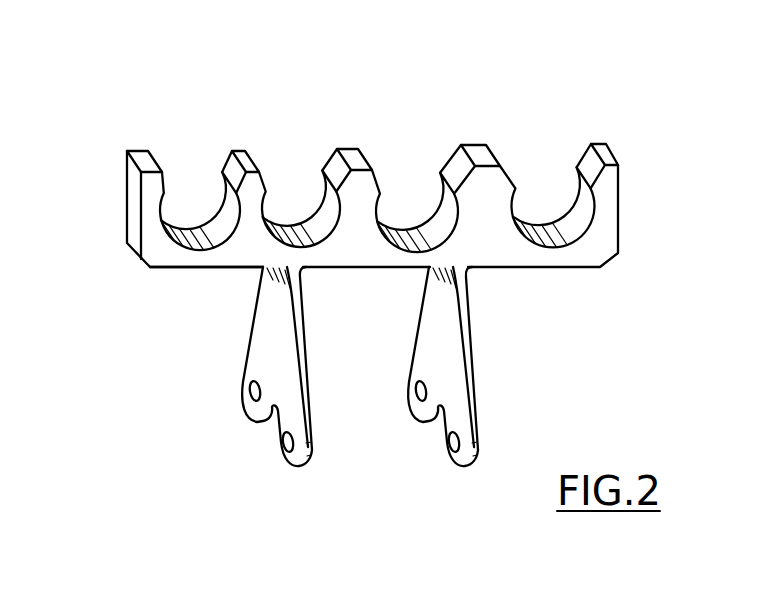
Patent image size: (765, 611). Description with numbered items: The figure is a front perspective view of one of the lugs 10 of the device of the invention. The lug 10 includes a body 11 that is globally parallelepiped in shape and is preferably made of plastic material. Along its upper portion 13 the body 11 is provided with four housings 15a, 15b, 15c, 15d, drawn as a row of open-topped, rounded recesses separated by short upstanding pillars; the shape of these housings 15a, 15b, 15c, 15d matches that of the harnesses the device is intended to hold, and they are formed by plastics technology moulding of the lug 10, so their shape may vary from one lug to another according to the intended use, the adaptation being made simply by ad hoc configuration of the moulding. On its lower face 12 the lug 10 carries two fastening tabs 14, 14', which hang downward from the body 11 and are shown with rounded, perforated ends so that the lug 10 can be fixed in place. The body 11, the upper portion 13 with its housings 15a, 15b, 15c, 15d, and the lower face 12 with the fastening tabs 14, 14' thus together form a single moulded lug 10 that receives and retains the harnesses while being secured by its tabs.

The lug 10 is at (457, 126).
The body 11 is at (598, 240).
The lower face 12 is at (178, 273).
The upper portion 13 is at (130, 151).
The fastening tab 14 is at (236, 366).
The fastening tab 14' is at (477, 366).
The housing 15a is at (212, 218).
The housing 15b is at (295, 222).
The housing 15c is at (428, 222).
The housing 15d is at (547, 228).